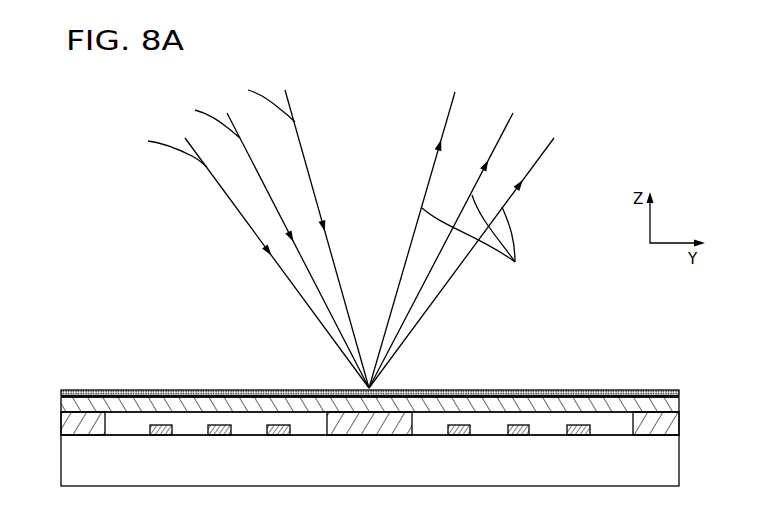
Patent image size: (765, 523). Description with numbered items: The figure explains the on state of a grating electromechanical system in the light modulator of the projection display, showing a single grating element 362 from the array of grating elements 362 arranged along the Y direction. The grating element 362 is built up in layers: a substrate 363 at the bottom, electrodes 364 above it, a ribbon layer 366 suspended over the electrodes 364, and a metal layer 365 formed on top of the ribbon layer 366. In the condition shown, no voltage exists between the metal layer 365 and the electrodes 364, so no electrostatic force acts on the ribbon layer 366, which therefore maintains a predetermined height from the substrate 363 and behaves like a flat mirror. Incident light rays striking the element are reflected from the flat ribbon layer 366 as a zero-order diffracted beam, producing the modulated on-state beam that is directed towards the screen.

The grating element 362 is at (598, 114).
The substrate 363 is at (72, 467).
The electrodes 364 is at (459, 435).
The metal layer 365 is at (70, 394).
The ribbon layer 366 is at (67, 409).